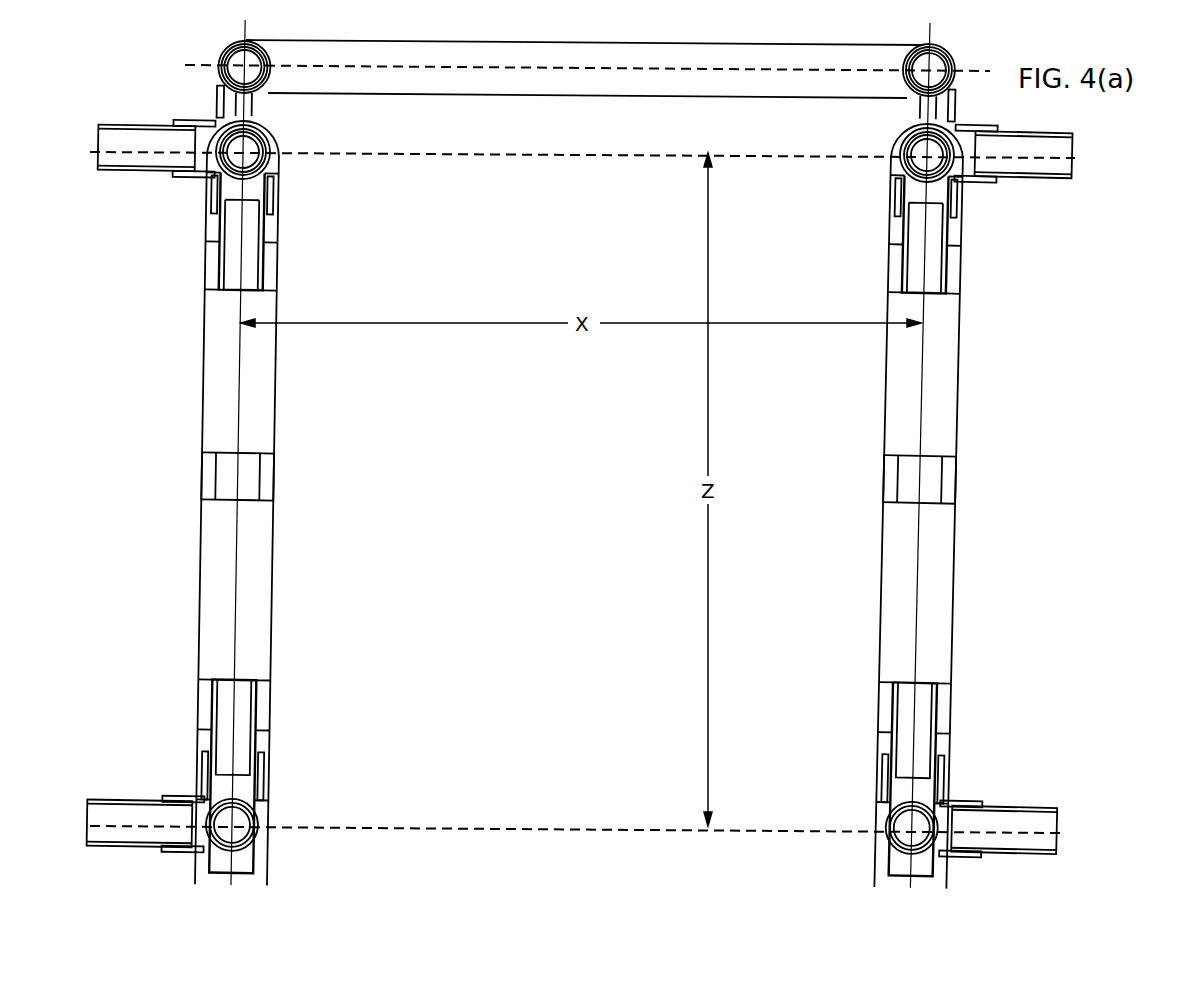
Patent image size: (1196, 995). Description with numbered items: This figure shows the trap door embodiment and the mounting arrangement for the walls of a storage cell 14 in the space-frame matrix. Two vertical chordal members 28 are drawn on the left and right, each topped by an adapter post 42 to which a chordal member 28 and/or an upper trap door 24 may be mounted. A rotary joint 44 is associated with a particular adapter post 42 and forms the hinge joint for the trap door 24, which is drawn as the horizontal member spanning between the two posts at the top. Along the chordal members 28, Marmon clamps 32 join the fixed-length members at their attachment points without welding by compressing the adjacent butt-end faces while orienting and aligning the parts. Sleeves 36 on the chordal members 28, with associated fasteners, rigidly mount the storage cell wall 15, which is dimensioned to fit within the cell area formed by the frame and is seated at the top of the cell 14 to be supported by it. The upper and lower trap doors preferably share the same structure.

The storage cell 14 is at (825, 448).
The storage cell wall 15 is at (875, 632).
The upper trap door 24 is at (872, 53).
The chordal member 28 is at (230, 277).
The Marmon clamp 32 is at (950, 205).
The sleeve 36 is at (245, 483).
The adapter post 42 is at (950, 82).
The rotary joint 44 is at (248, 64).